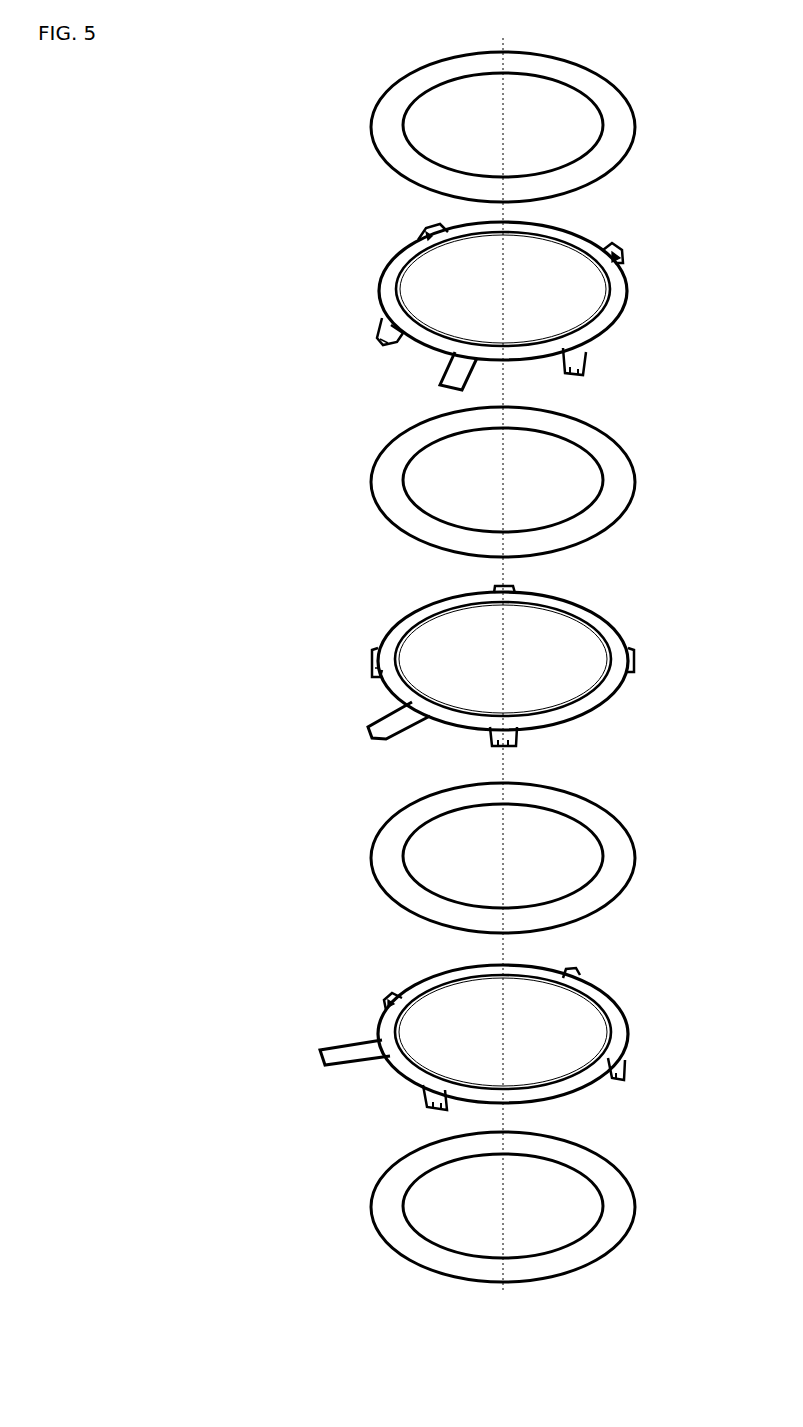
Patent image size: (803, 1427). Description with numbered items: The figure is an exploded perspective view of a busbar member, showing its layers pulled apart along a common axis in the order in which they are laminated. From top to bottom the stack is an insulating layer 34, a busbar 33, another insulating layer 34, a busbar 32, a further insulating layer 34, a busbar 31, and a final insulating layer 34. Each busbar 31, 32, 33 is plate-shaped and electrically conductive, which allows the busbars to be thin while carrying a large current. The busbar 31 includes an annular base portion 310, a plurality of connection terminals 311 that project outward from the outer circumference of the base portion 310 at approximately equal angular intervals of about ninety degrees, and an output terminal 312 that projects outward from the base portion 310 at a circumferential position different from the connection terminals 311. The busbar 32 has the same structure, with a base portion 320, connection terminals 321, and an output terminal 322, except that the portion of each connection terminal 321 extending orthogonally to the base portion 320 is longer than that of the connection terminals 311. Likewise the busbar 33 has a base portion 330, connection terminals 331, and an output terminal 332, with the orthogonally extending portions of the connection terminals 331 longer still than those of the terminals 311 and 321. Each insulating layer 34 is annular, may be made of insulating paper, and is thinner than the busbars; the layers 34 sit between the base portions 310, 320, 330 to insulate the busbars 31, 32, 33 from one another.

The busbar 31 is at (505, 1032).
The base portion 310 is at (618, 1020).
The connection terminals 311 is at (388, 994).
The output terminal 312 is at (332, 1050).
The busbar 32 is at (520, 663).
The base portion 320 is at (600, 694).
The connection terminals 321 is at (515, 590).
The output terminal 322 is at (376, 726).
The busbar 33 is at (530, 296).
The base portion 330 is at (618, 296).
The connection terminals 331 is at (416, 233).
The output terminal 332 is at (441, 372).
The insulating layer 34 is at (623, 120).